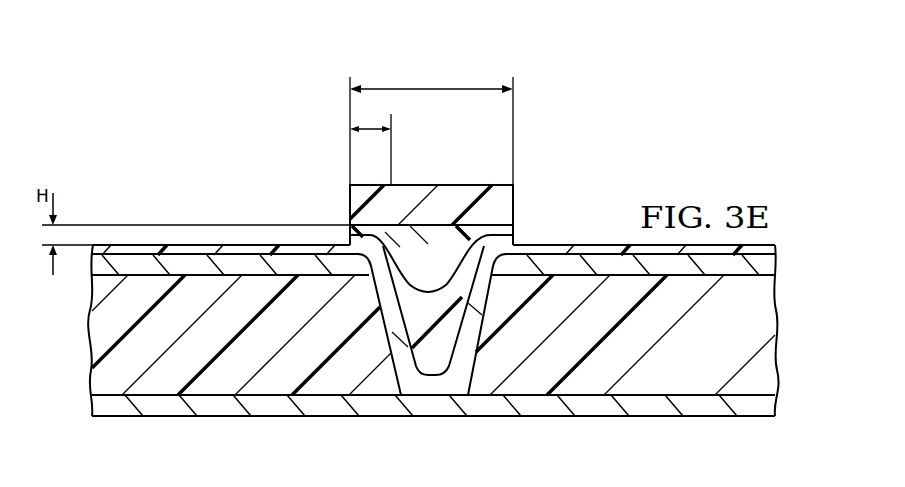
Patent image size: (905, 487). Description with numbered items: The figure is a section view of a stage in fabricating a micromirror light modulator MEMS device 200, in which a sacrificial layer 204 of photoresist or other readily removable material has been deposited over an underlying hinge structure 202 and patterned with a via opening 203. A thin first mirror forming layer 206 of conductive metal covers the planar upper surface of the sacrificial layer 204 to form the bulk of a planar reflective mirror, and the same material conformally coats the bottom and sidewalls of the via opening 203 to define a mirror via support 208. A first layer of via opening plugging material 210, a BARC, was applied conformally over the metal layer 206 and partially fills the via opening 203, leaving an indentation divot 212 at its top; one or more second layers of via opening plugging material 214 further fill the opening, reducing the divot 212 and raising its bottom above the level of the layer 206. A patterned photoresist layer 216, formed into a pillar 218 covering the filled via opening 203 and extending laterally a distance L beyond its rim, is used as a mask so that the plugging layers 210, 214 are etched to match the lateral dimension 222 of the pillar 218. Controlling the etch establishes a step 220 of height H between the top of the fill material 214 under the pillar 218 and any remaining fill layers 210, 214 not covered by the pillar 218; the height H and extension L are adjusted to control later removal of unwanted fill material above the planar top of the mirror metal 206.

The micromirror light modulator MEMS device 200 is at (270, 74).
The hinge structure 202 is at (97, 407).
The via opening 203 is at (431, 378).
The sacrificial layer 204 is at (90, 331).
The first mirror forming layer 206 is at (778, 265).
The mirror via support 208 is at (474, 154).
The first layer of via opening plugging material 210 is at (446, 360).
The indentation divot 212 is at (428, 230).
The second layer of via opening plugging material 214 is at (504, 230).
The photoresist layer 216 is at (504, 207).
The pillar 218 is at (326, 168).
The step 220 is at (346, 236).
The lateral dimension 222 is at (433, 88).